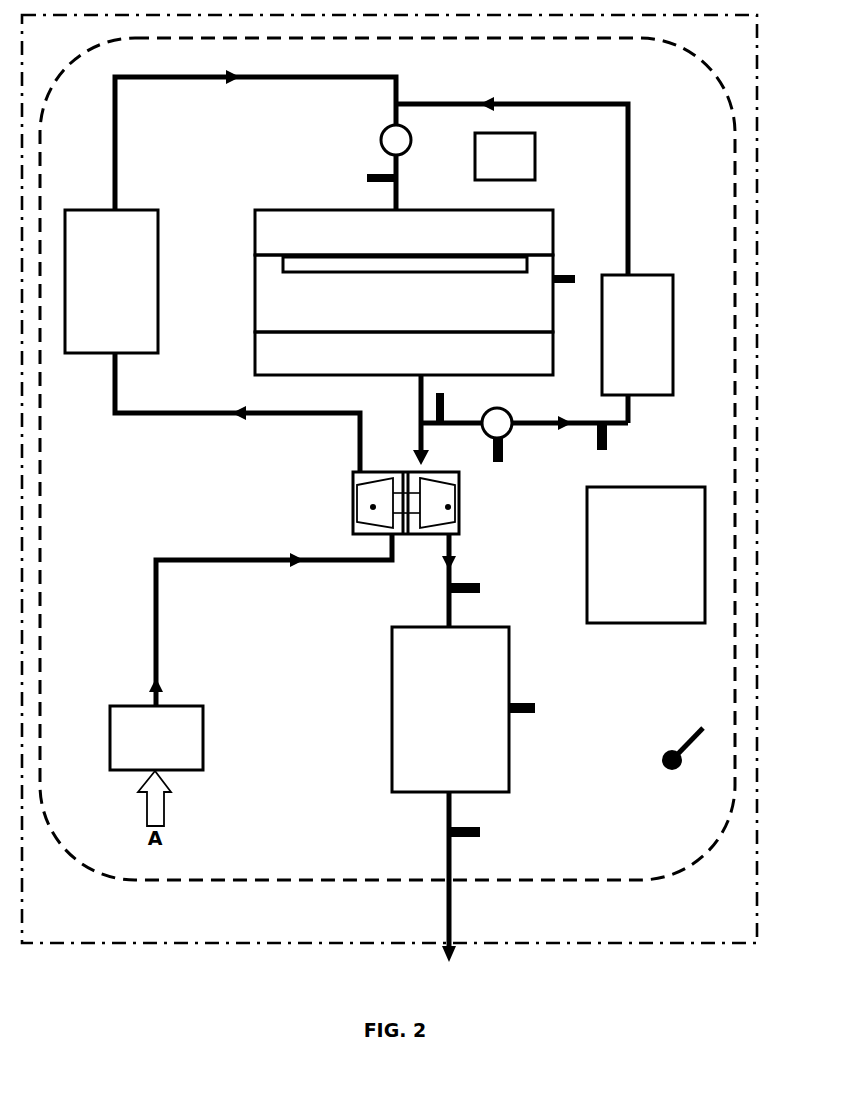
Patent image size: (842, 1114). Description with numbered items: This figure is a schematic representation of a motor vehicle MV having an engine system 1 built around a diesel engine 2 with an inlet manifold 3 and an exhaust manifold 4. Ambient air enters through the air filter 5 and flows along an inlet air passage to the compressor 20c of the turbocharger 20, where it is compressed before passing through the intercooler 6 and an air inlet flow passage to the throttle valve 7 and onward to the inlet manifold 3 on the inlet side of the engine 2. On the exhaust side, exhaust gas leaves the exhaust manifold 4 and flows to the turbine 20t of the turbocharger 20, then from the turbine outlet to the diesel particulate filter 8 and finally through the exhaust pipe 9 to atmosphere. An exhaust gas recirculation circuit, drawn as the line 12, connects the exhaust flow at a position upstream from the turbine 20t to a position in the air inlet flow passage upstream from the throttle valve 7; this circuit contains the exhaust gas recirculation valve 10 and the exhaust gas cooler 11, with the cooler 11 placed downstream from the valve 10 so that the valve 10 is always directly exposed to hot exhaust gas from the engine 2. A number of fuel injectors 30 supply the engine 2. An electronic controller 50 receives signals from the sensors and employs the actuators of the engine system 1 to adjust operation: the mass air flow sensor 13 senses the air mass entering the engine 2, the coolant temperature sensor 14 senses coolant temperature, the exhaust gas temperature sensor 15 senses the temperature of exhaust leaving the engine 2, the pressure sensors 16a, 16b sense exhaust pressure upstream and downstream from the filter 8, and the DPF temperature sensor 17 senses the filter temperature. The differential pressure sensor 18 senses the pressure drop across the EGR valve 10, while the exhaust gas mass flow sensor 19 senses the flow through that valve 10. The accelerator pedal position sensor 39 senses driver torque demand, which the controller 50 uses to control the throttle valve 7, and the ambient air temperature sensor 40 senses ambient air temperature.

The engine system 1 is at (387, 488).
The diesel engine 2 is at (404, 293).
The inlet manifold 3 is at (404, 232).
The exhaust manifold 4 is at (404, 353).
The air filter 5 is at (156, 738).
The intercooler 6 is at (111, 281).
The throttle valve 7 is at (381, 144).
The diesel particulate filter 8 is at (450, 709).
The exhaust pipe 9 is at (447, 851).
The exhaust gas recirculation valve 10 is at (516, 436).
The exhaust gas cooler 11 is at (637, 335).
The exhaust gas recirculation line 12 is at (631, 214).
The mass air flow sensor 13 is at (367, 178).
The coolant temperature sensor 14 is at (566, 277).
The exhaust gas temperature sensor 15 is at (444, 393).
The pressure sensor 16a is at (480, 586).
The pressure sensor 16b is at (480, 831).
The DPF temperature sensor 17 is at (535, 705).
The differential pressure sensor 18 is at (503, 462).
The exhaust gas mass flow sensor 19 is at (606, 441).
The turbocharger 20 is at (358, 503).
The compressor 20c is at (373, 507).
The turbine 20t is at (448, 507).
The fuel injectors 30 is at (274, 258).
The accelerator pedal position sensor 39 is at (661, 763).
The ambient air temperature sensor 40 is at (505, 156).
The electronic controller 50 is at (646, 555).
The motor vehicle MV is at (99, 950).